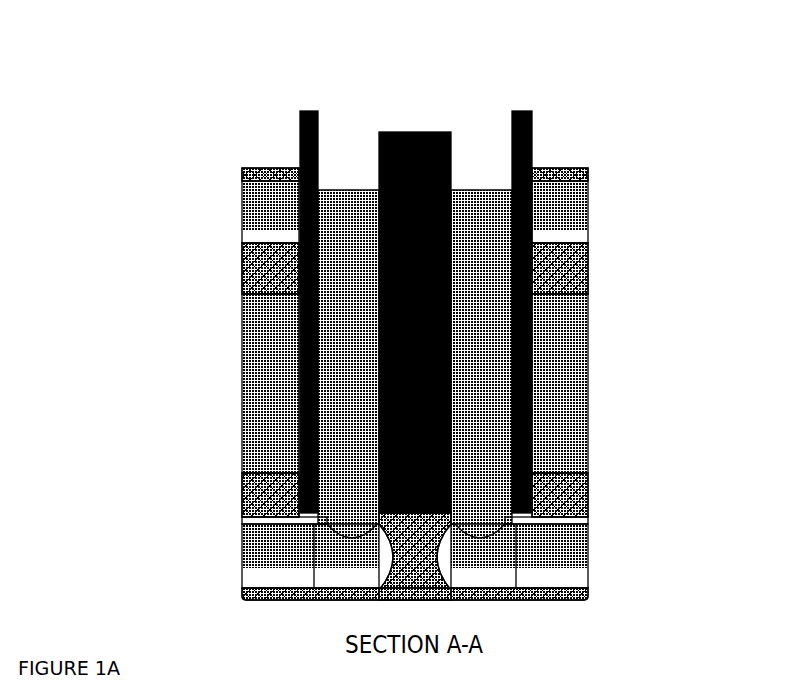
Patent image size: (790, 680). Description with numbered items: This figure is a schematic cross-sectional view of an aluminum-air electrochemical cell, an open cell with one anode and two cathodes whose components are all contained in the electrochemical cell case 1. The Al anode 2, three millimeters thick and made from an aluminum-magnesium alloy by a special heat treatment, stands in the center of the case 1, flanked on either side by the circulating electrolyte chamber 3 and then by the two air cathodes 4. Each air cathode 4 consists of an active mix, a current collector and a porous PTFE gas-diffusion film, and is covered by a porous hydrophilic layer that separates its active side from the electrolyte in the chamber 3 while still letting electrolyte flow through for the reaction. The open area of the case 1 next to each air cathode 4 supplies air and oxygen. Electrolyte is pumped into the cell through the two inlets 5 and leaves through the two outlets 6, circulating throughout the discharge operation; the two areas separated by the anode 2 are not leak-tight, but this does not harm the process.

The electrochemical cell case 1 is at (415, 562).
The Al anode 2 is at (413, 149).
The circulating electrolyte chamber 3 is at (350, 473).
The air cathode 4 is at (300, 130).
The inlet 5 is at (285, 557).
The outlet 6 is at (268, 211).